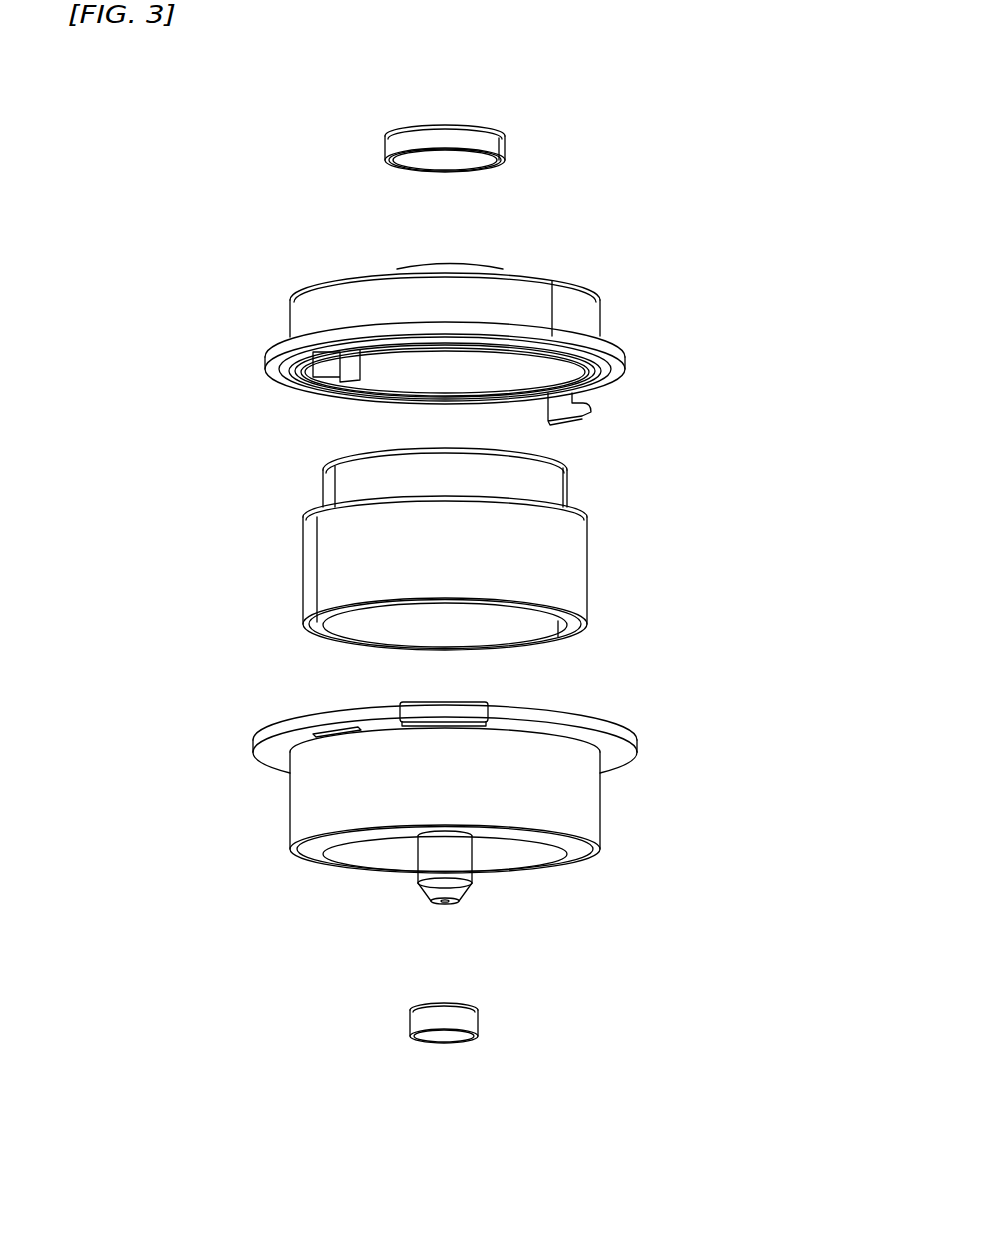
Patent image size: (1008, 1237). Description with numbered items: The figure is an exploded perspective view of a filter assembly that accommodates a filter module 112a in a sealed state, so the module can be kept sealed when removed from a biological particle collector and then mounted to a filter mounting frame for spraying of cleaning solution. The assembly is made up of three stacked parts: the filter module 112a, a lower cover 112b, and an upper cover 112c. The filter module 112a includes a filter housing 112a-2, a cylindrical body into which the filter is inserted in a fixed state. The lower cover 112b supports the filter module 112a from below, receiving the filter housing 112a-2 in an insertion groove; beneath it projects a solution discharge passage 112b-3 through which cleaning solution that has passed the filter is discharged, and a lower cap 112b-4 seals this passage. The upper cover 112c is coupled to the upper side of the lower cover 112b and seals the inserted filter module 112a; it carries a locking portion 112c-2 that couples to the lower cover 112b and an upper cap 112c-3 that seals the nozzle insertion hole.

The upper cover 112c is at (182, 115).
The upper cap 112c-3 is at (505, 150).
The locking portion 112c-2 is at (575, 421).
The filter module 112a is at (233, 550).
The filter housing 112a-2 is at (588, 573).
The lower cover 112b is at (192, 687).
The solution discharge passage 112b-3 is at (451, 903).
The lower cap 112b-4 is at (480, 1023).